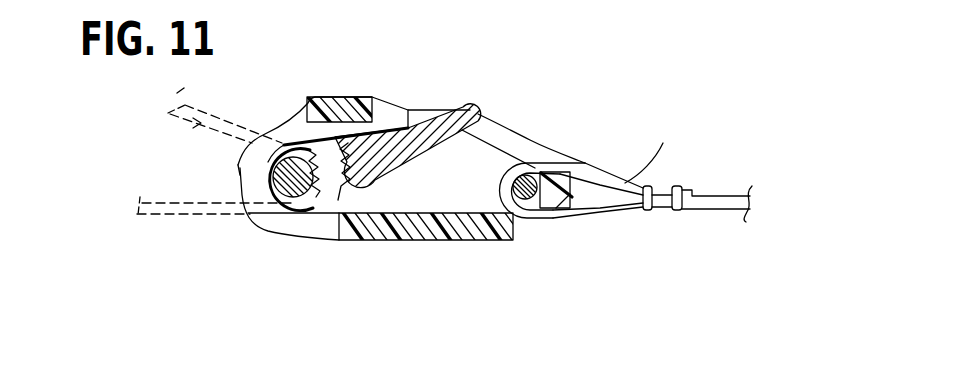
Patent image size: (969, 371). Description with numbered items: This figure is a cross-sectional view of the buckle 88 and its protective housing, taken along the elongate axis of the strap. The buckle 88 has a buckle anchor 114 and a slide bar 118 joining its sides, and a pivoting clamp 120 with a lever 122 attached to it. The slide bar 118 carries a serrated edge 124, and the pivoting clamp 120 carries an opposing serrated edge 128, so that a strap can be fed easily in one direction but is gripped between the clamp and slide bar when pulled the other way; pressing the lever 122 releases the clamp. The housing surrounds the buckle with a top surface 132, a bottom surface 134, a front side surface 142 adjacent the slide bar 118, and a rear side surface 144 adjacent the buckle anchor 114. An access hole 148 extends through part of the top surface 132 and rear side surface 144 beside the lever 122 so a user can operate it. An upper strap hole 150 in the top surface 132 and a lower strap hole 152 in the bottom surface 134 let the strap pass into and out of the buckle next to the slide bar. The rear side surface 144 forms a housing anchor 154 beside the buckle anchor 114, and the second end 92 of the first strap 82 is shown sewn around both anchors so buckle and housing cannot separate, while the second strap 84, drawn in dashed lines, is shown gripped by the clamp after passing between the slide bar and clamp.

The first strap 82 is at (718, 210).
The second strap 84 is at (160, 222).
The buckle 88 is at (514, 235).
The second ends of the first and second straps 92 is at (125, 133).
The buckle anchor 114 is at (530, 165).
The slide bar 118 is at (283, 180).
The pivoting clamp 120 is at (364, 195).
The lever 122 is at (466, 106).
The serrated edge 124 is at (325, 142).
The opposing serrated edge 128 is at (338, 200).
The top surface 132 is at (361, 95).
The bottom surface 134 is at (447, 243).
The front side surface 142 is at (236, 165).
The rear side surface 144 is at (576, 197).
The access hole 148 is at (505, 128).
The upper strap hole 150 is at (282, 141).
The lower strap hole 152 is at (289, 234).
The housing anchor 154 is at (558, 171).